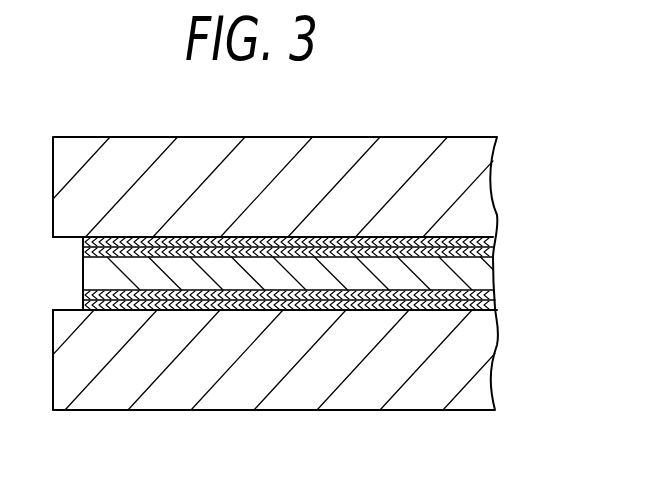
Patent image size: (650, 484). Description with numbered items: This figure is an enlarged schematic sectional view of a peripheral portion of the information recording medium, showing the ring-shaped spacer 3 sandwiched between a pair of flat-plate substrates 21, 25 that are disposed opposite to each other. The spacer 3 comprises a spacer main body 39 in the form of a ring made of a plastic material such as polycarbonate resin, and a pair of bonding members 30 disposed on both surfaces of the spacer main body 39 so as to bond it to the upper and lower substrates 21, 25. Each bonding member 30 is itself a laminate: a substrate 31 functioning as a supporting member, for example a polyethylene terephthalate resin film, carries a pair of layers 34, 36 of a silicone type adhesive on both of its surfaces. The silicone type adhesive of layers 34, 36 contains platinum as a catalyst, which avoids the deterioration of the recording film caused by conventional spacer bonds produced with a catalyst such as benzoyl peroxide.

The spacer 3 is at (329, 292).
The substrate 21 is at (472, 152).
The substrate 25 is at (468, 398).
The bonding member 30 is at (340, 292).
The substrate 31 is at (494, 248).
The layer of silicone type adhesive 34 is at (494, 240).
The layer of silicone type adhesive 36 is at (317, 283).
The spacer main body 39 is at (97, 272).